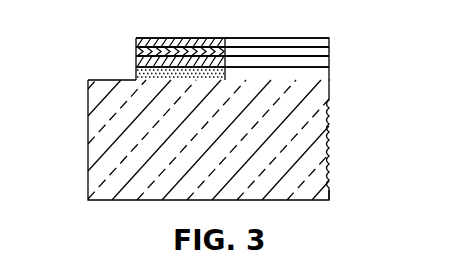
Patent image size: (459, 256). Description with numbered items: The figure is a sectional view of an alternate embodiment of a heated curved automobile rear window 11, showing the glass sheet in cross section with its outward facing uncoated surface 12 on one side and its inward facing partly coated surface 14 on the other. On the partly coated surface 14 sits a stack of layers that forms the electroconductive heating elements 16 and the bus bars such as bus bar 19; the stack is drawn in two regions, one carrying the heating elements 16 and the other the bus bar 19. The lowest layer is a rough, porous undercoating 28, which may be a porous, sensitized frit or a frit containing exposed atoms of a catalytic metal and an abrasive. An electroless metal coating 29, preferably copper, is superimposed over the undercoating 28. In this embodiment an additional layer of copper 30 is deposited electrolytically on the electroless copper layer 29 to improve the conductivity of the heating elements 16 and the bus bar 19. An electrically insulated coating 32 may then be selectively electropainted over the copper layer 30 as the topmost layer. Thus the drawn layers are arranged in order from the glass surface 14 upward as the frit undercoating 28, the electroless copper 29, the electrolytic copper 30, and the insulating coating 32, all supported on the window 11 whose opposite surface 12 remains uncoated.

The curved automobile rear window 11 is at (343, 136).
The outward facing uncoated surface 12 is at (130, 198).
The inward facing partly coated surface 14 is at (113, 80).
The electroconductive heating elements 16 is at (283, 26).
The bus bar 19 is at (190, 26).
The rough, porous undercoating 28 is at (239, 85).
The electroless metal coating 29 is at (136, 64).
The additional layer of copper 30 is at (136, 49).
The electrically insulated coating 32 is at (136, 41).